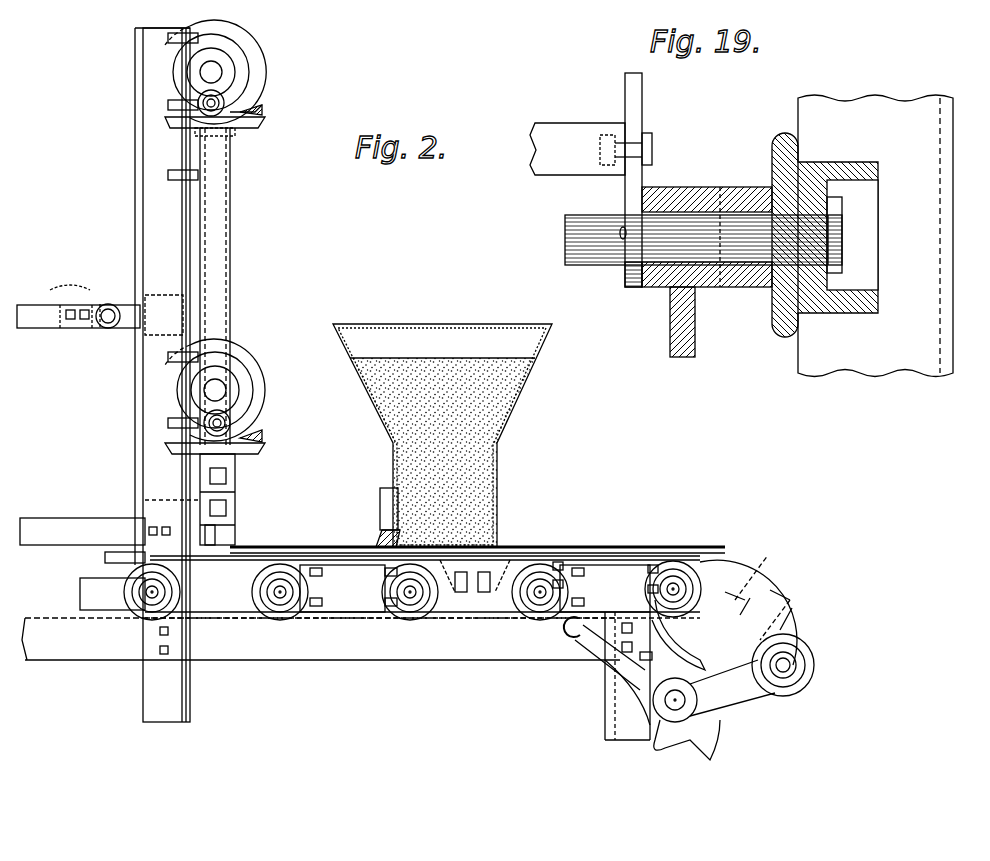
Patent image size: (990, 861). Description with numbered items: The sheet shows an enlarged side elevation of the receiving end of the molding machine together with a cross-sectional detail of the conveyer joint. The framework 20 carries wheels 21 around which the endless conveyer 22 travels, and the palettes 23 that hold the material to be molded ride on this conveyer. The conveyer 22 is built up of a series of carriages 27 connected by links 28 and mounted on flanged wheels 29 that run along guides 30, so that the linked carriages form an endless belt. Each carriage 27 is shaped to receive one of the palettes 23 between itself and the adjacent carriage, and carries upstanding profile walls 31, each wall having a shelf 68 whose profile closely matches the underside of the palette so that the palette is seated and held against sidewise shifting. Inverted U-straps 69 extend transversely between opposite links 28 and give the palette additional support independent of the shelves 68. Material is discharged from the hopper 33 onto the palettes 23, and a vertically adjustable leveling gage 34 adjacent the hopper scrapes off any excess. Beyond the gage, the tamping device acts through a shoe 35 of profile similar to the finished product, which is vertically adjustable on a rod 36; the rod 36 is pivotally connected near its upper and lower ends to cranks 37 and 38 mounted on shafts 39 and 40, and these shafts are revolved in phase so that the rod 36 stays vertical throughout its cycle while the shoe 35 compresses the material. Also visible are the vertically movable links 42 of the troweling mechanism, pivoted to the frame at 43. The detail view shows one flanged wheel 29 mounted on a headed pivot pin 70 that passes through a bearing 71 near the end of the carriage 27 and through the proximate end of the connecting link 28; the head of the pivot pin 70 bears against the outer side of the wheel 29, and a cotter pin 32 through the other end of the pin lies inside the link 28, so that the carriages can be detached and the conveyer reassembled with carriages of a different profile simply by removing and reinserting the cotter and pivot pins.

In FIG. 2, the framework 20 is at (158, 690).
In FIG. 2, the wheels 21 is at (598, 682).
In FIG. 2, the endless conveyer 22 is at (422, 602).
In FIG. 2, the palettes 23 is at (299, 547).
In FIG. 2, the carriages 27 is at (176, 592).
In FIG. 19, the carriages 27 is at (670, 322).
In FIG. 2, the links 28 is at (462, 588).
In FIG. 19, the links 28 is at (625, 97).
In FIG. 2, the flanged wheels 29 is at (266, 606).
In FIG. 19, the flanged wheels 29 is at (775, 152).
In FIG. 2, the guides 30 is at (322, 655).
In FIG. 19, the guides 30 is at (864, 102).
In FIG. 2, the profile walls 31 is at (439, 587).
In FIG. 19, the cotter pin 32 is at (620, 240).
In FIG. 2, the hopper 33 is at (487, 470).
In FIG. 2, the leveling gage 34 is at (378, 541).
In FIG. 2, the shoe 35 is at (235, 535).
In FIG. 2, the rod 36 is at (215, 250).
In FIG. 2, the crank 37 is at (226, 103).
In FIG. 2, the crank 38 is at (233, 418).
In FIG. 2, the shaft 39 is at (218, 72).
In FIG. 2, the shaft 40 is at (225, 385).
In FIG. 2, the links 42 is at (37, 310).
In FIG. 2, the pivot 43 is at (108, 304).
In FIG. 2, the shelf 68 is at (748, 556).
In FIG. 2, the inverted U-straps 69 is at (565, 560).
In FIG. 19, the inverted U-straps 69 is at (535, 158).
In FIG. 19, the pivot pin 70 is at (565, 238).
In FIG. 19, the bearing 71 is at (683, 186).